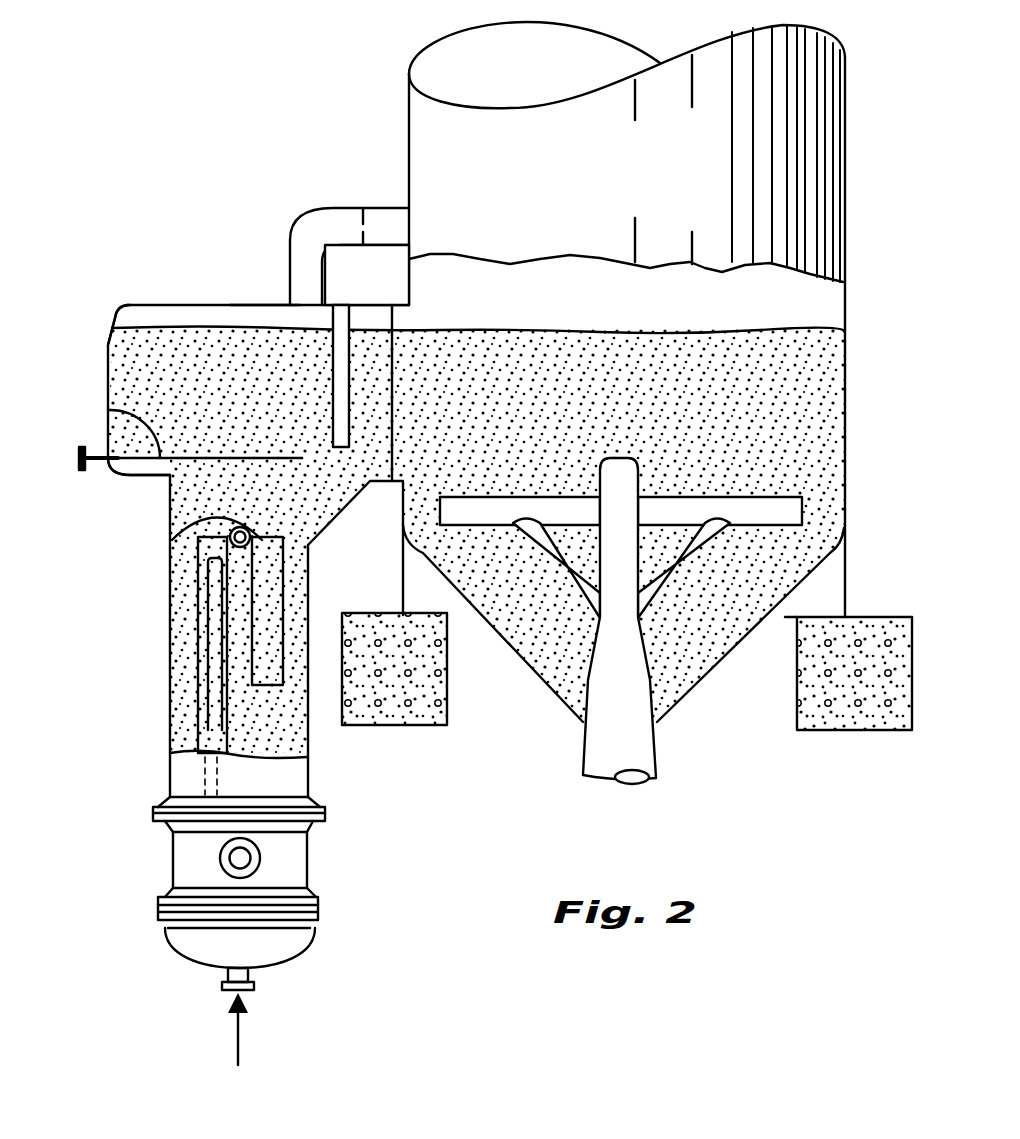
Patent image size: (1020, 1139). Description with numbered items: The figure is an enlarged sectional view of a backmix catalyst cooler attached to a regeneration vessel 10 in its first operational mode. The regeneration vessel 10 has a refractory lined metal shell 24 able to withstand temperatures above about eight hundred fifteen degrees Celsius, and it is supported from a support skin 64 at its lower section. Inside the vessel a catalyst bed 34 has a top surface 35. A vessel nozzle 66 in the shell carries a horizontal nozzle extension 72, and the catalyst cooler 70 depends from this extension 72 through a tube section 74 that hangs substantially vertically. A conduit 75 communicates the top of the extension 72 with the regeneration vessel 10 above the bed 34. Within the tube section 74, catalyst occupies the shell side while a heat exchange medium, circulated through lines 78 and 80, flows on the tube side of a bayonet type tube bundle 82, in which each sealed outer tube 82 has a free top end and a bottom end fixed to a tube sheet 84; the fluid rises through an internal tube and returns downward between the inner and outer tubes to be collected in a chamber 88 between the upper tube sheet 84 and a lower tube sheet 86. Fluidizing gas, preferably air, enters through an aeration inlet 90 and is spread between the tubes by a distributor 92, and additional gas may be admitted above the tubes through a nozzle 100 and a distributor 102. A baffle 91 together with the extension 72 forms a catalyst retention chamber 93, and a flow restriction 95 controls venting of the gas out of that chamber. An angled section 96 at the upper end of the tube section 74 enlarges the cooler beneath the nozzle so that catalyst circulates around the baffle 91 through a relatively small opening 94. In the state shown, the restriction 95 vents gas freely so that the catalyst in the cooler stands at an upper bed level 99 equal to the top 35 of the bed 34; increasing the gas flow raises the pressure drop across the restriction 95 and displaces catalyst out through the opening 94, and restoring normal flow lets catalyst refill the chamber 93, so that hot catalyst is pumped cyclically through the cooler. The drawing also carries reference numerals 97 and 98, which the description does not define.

The regeneration vessel 10 is at (858, 140).
The refractory lined metal shell 24 is at (409, 107).
The catalyst bed 34 is at (799, 391).
The top of catalyst bed surface 35 is at (612, 328).
The support skin 64 is at (845, 573).
The vessel nozzle 66 is at (390, 305).
The catalyst cooler 70 is at (125, 496).
The nozzle extension 72 is at (263, 305).
The tube section 74 is at (170, 612).
The conduit 75 is at (310, 215).
The line 78 is at (250, 978).
The line 80 is at (260, 862).
The tube bundle 82 is at (214, 696).
The tube sheet 84 is at (325, 813).
The lower tube sheet 86 is at (318, 910).
The chamber 88 is at (187, 848).
The aeration inlet 90 is at (205, 517).
The baffle 91 is at (333, 385).
The distributor 92 is at (285, 587).
The catalyst retention chamber 93 is at (236, 380).
The opening 94 is at (368, 458).
The flow restriction 95 is at (345, 208).
The angled section 96 is at (349, 503).
The top plate 97 is at (210, 320).
The material level 98 is at (437, 330).
The upper bed level 99 is at (150, 326).
The nozzle 100 is at (90, 452).
The distributor 102 is at (106, 411).